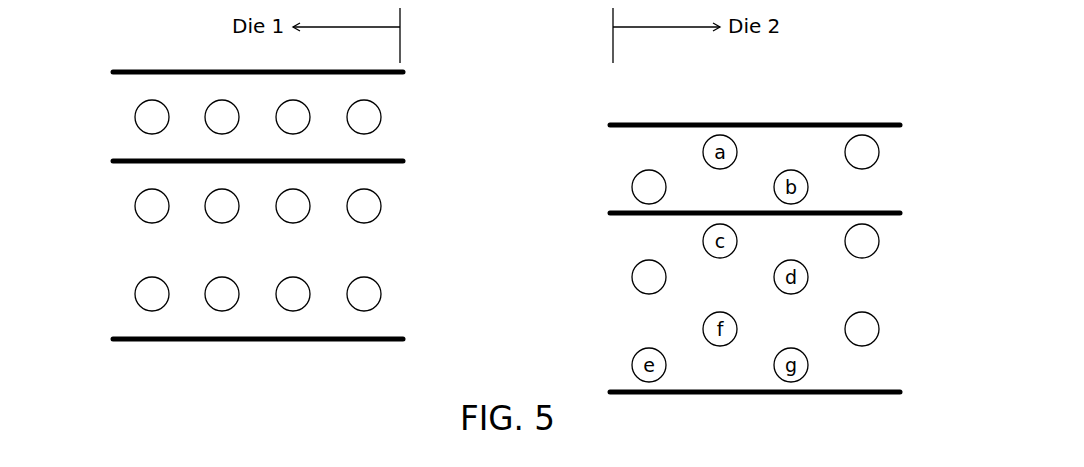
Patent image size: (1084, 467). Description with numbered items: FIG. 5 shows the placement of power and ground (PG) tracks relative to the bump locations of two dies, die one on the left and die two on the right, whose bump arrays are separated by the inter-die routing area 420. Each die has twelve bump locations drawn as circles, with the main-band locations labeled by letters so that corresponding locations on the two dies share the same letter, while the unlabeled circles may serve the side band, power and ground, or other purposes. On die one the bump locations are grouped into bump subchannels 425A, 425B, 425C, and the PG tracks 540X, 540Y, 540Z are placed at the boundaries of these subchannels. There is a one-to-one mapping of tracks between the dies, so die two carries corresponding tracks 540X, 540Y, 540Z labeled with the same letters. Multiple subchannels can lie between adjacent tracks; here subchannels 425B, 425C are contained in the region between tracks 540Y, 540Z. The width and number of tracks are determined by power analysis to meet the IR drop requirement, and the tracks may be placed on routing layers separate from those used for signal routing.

The inter-die routing area 420 is at (400, 44).
The PG track X 540X is at (501, 98).
The PG track Y 540Y is at (501, 187).
The PG track Z 540Z is at (501, 365).
The bump subchannel A 425A is at (225, 117).
The bump subchannel B 425B is at (225, 206).
The bump subchannel C 425C is at (225, 294).